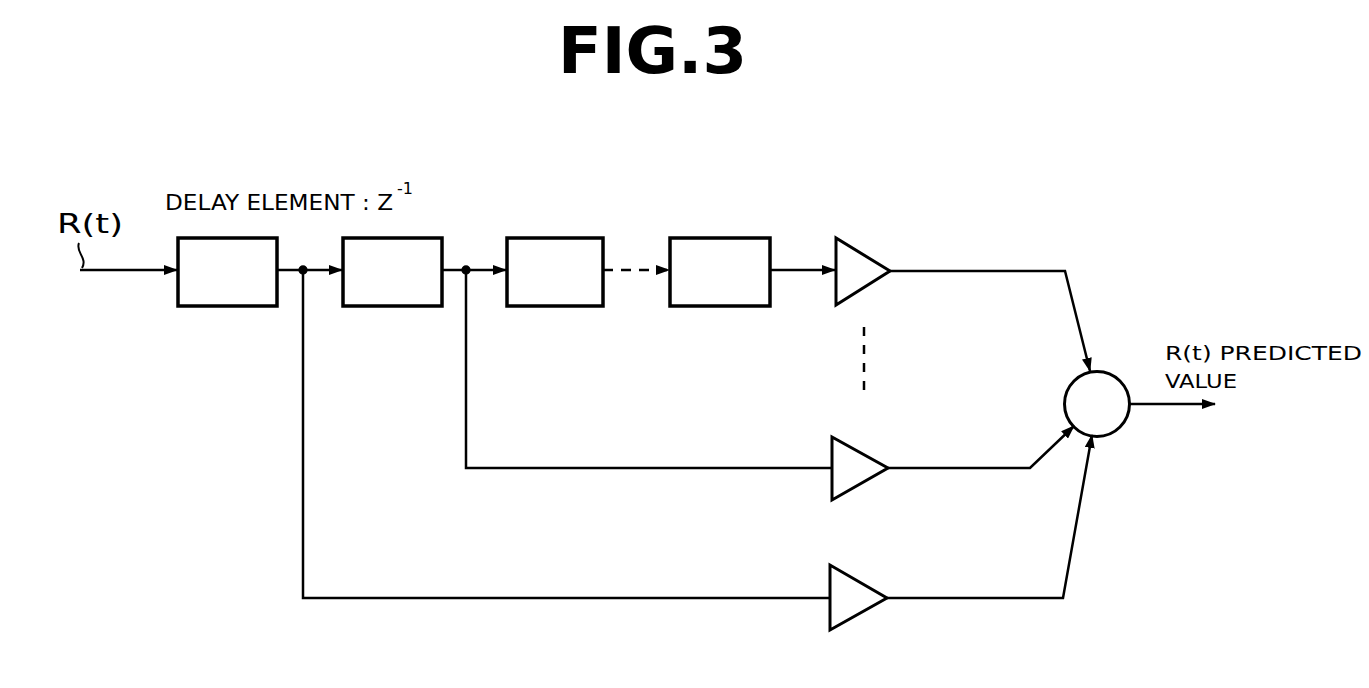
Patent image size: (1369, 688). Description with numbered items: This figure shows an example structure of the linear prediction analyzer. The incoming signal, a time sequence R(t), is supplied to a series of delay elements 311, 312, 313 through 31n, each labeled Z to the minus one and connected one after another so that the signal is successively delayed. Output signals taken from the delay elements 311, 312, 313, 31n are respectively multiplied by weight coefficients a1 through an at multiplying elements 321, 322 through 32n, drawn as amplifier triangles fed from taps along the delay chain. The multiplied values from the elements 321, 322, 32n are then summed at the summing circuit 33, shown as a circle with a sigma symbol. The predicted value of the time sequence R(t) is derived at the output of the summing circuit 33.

The delay element 311 is at (205, 306).
The delay element 312 is at (372, 306).
The delay element 313 is at (540, 306).
The delay element 31n is at (700, 306).
The multiplying element 321 is at (868, 610).
The multiplying element 322 is at (870, 480).
The multiplying element 32n is at (872, 283).
The summing circuit 33 is at (1120, 432).